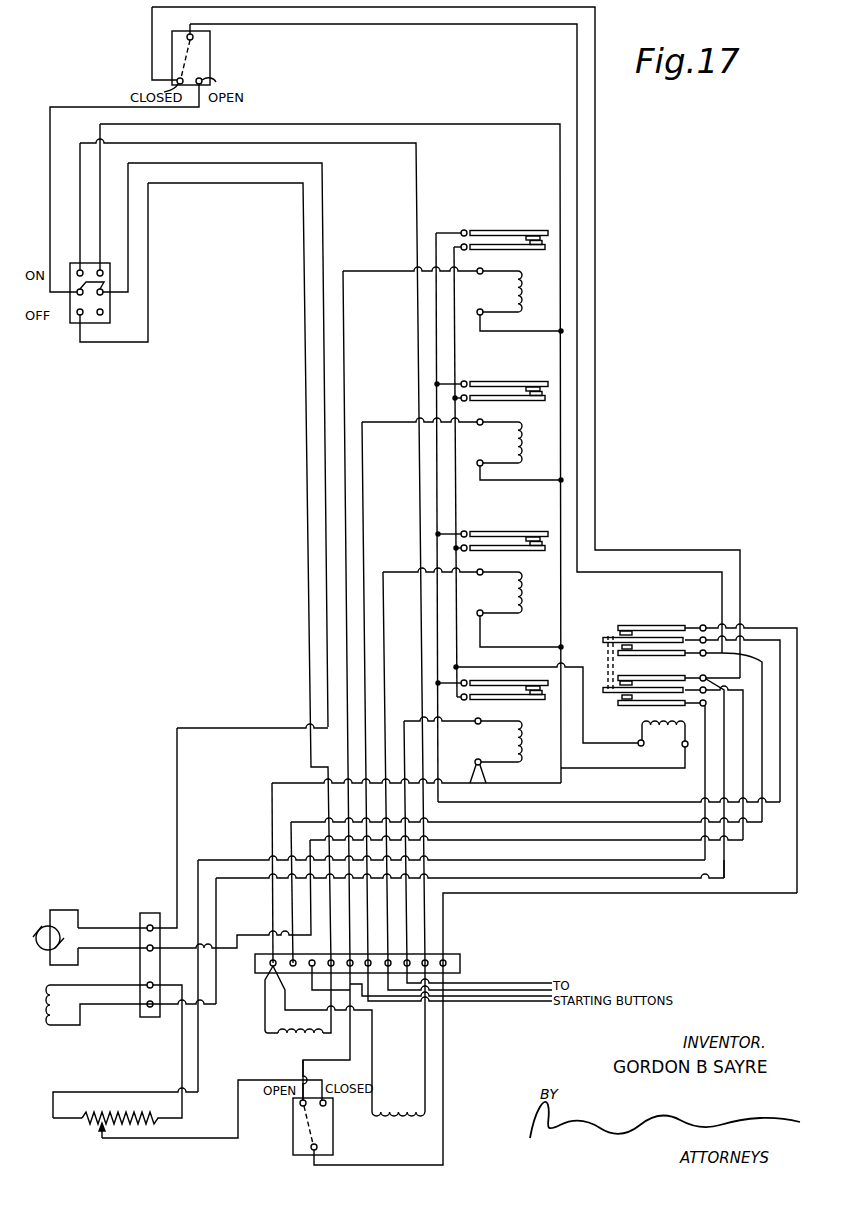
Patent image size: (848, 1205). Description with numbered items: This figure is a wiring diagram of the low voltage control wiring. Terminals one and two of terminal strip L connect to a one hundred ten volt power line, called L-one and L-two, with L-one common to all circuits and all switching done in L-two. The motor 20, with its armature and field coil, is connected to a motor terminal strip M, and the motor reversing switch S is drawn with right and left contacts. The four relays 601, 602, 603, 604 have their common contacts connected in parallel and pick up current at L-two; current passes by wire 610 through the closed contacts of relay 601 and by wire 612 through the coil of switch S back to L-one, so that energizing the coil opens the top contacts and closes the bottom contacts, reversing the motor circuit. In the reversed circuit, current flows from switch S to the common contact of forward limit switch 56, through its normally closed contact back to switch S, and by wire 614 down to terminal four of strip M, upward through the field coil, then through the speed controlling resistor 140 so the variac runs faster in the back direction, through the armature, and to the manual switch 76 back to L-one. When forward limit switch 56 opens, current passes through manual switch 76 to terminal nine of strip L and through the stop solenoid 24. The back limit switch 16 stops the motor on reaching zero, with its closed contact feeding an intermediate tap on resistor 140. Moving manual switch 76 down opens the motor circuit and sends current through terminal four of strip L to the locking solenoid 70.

The limit switch 56 is at (198, 61).
The manual switch 76 is at (100, 293).
The relay 604 is at (499, 281).
The relay 603 is at (499, 431).
The relay 602 is at (499, 590).
The relay 601 is at (492, 731).
The wire 610 is at (635, 800).
The wire 612 is at (583, 743).
The wire 614 is at (724, 877).
The terminal strip L is at (460, 963).
The motor terminal strip M is at (153, 1017).
The motor 20 is at (87, 999).
The solenoid 70 is at (283, 1040).
The stop solenoid 24 is at (398, 1096).
The limit switch 16 is at (333, 1141).
The speed controlling resistor 140 is at (121, 1111).